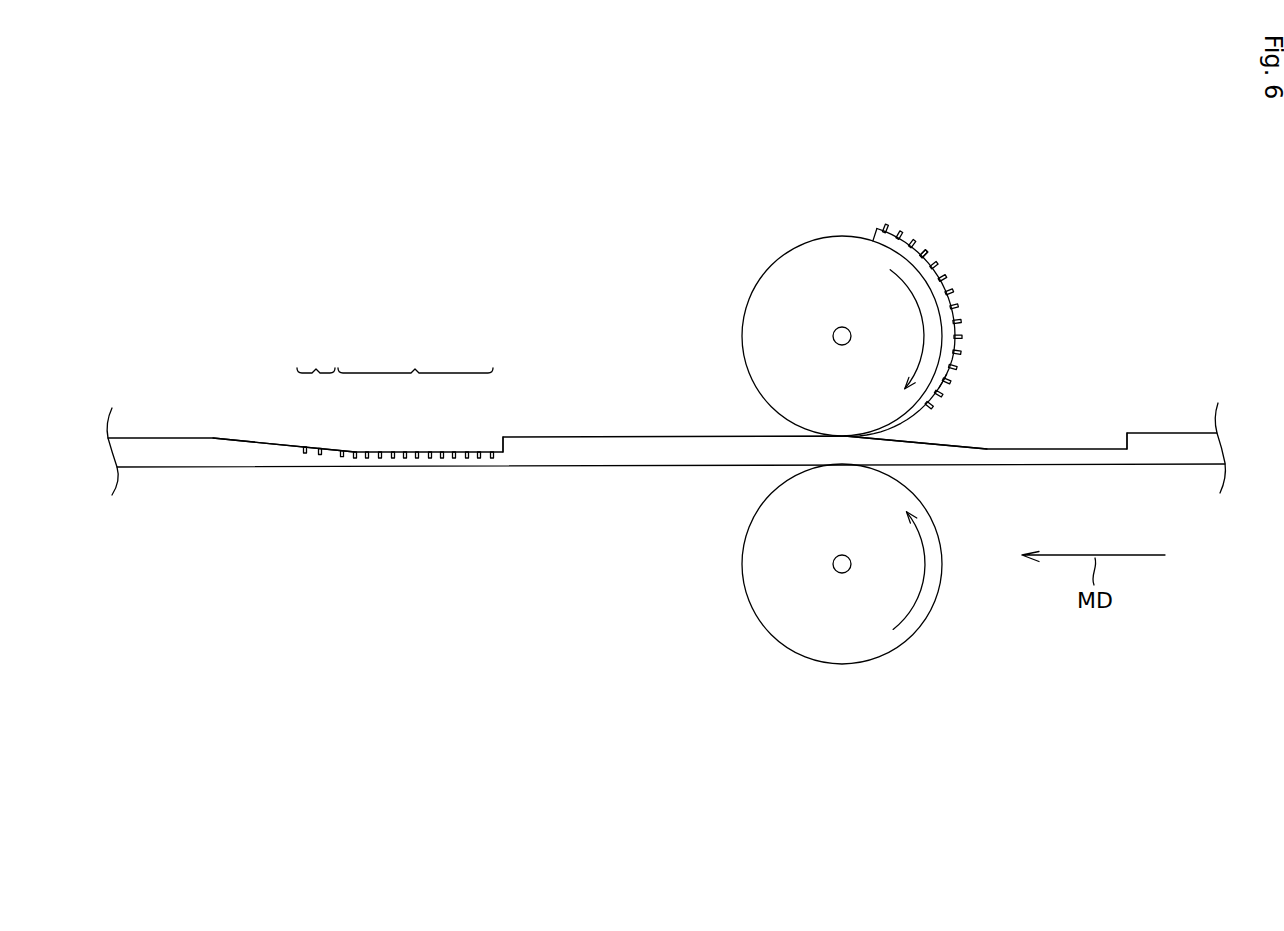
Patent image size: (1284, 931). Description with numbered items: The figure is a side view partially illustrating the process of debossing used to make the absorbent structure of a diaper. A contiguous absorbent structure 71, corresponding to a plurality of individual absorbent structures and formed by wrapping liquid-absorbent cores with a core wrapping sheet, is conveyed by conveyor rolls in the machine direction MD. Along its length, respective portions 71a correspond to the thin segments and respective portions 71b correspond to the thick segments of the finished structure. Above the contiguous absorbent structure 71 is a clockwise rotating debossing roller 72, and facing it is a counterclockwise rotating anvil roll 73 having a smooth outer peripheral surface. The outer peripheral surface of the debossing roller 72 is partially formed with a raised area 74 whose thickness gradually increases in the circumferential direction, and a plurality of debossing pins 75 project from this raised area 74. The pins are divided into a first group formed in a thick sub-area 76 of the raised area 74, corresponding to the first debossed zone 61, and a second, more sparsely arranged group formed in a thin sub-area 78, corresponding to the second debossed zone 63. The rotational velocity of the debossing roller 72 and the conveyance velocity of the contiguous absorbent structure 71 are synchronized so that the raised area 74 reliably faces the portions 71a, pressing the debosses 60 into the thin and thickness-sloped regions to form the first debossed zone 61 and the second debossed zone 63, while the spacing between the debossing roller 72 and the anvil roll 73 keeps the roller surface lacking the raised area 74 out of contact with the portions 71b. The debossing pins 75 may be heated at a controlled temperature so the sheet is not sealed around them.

The debosses 60 is at (355, 452).
The first debossed zone 61 is at (415, 359).
The second debossed zone 63 is at (316, 359).
The contiguous absorbent structure 71 is at (1160, 445).
The portions corresponding to the thin segments 71a is at (435, 458).
The portions corresponding to the thick segments 71b is at (174, 450).
The debossing roller 72 is at (842, 263).
The anvil roll 73 is at (763, 545).
The raised area 74 is at (939, 296).
The debossing pins 75 is at (960, 329).
The thick sub-area 76 is at (925, 251).
The thin sub-area 78 is at (940, 377).